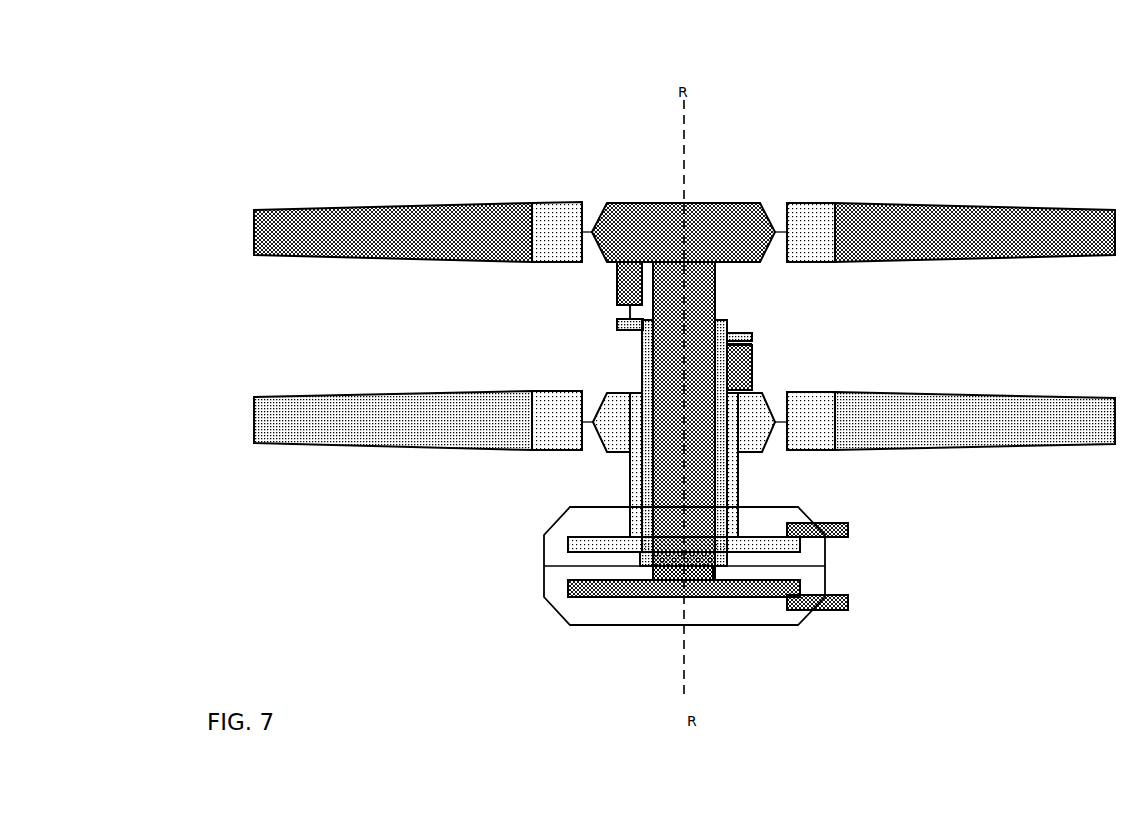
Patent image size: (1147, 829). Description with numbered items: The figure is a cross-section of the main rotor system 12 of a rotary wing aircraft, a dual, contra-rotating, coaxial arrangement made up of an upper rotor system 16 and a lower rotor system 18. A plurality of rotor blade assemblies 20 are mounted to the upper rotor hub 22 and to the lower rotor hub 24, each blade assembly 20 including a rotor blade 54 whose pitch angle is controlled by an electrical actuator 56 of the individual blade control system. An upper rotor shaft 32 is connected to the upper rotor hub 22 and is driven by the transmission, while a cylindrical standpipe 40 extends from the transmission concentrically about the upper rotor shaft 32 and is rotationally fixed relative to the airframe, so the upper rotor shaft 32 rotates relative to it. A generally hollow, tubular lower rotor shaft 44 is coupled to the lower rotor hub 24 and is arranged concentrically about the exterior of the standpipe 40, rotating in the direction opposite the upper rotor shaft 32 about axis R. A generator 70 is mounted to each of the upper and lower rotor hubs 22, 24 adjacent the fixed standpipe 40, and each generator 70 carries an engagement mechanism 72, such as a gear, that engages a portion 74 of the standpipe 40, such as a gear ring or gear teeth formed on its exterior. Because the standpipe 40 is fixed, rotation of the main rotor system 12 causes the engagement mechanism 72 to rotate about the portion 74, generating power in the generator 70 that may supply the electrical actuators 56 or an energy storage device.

The main rotor system 12 is at (912, 78).
The upper rotor system 16 is at (742, 176).
The lower rotor system 18 is at (526, 472).
The rotor blade assembly 20 is at (300, 190).
The upper rotor hub 22 is at (644, 208).
The lower rotor hub 24 is at (615, 417).
The upper rotor shaft 32 is at (716, 278).
The standpipe 40 is at (720, 460).
The lower rotor shaft 44 is at (636, 478).
The rotor blade 54 is at (1026, 220).
The electrical actuator 56 is at (553, 225).
The generator 70 is at (617, 284).
The engagement mechanism 72 is at (617, 323).
The portion of the standpipe 74 is at (728, 324).